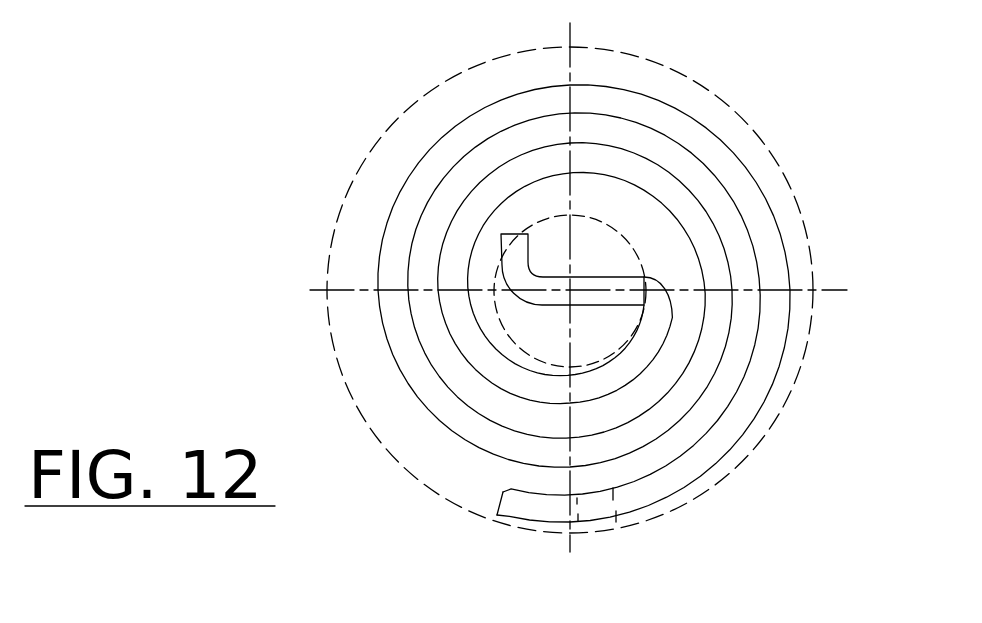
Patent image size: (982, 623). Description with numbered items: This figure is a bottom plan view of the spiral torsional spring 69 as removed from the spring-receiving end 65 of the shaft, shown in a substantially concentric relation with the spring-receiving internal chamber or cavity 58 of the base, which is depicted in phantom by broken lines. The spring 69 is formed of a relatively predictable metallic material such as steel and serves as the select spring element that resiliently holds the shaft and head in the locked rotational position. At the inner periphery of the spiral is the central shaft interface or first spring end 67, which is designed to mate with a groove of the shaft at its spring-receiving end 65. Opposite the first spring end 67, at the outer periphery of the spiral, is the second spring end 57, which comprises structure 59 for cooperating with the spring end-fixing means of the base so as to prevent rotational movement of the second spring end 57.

The second spring end 57 is at (533, 510).
The internal chamber or cavity 58 is at (408, 109).
The structure for cooperating with the spring end-fixing means 59 is at (600, 512).
The spring-receiving end 65 is at (613, 227).
The first spring end 67 is at (545, 305).
The spiral torsional spring 69 is at (745, 192).